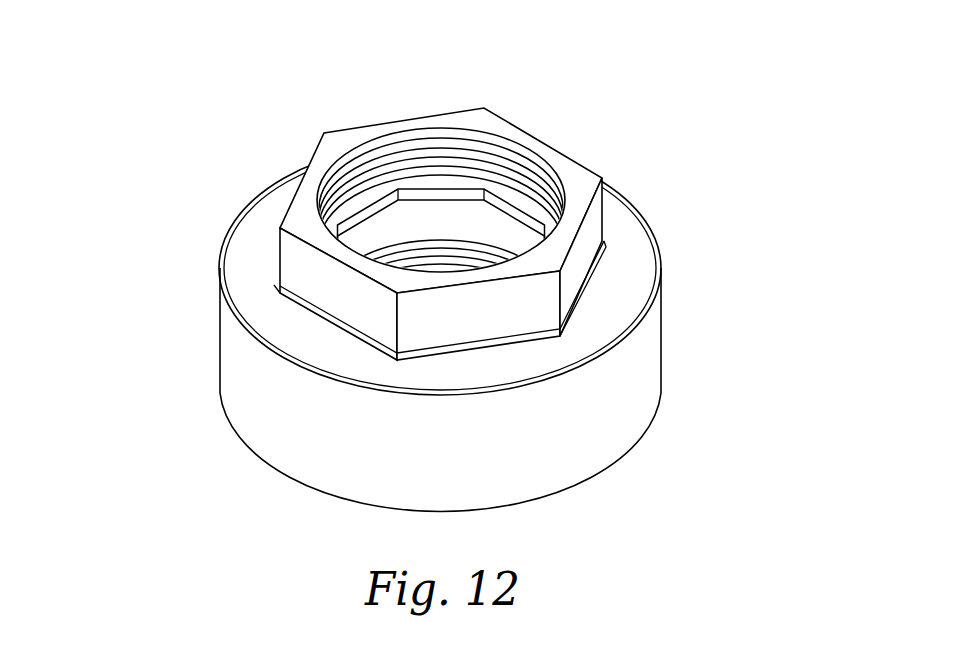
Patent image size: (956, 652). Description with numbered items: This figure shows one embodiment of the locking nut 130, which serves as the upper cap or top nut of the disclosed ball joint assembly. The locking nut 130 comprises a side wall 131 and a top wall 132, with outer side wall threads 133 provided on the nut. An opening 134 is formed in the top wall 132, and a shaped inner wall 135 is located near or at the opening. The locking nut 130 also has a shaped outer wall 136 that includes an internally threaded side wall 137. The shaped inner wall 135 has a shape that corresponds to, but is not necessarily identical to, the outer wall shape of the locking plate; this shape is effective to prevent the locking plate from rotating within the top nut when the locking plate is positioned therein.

The locking nut 130 is at (172, 260).
The side wall 131 is at (665, 367).
The top wall 132 is at (636, 276).
The outer side wall threads 133 is at (411, 266).
The opening 134 is at (386, 140).
The shaped inner wall 135 is at (435, 200).
The shaped outer wall 136 is at (620, 218).
The internally threaded side wall 137 is at (448, 157).